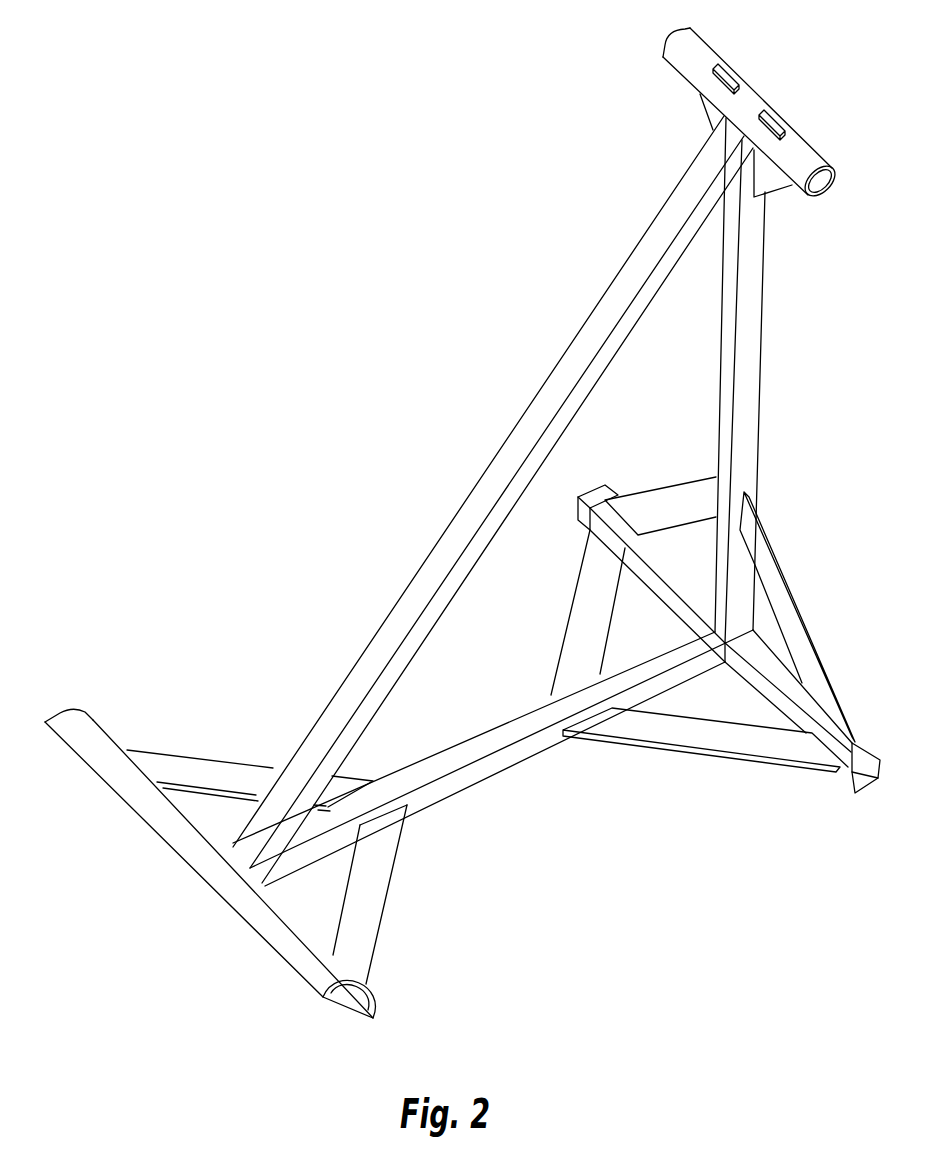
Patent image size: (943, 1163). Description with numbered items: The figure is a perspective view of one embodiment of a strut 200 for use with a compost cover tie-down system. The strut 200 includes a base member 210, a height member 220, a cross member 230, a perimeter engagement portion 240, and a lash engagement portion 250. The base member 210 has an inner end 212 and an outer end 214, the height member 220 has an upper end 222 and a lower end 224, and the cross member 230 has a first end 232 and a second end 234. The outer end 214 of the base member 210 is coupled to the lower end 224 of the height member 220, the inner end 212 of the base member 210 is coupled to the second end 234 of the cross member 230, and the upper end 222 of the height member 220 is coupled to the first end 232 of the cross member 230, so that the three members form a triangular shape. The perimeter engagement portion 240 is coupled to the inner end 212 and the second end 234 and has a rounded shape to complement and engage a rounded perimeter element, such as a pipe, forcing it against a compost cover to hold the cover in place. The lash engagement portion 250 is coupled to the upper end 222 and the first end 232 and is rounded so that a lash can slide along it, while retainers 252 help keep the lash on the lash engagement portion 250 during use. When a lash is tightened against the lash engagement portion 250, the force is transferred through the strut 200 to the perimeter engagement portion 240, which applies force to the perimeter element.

The strut 200 is at (284, 153).
The base member 210 is at (445, 790).
The inner end 212 is at (304, 898).
The outer end 214 is at (724, 690).
The height member 220 is at (757, 420).
The upper end 222 is at (777, 197).
The lower end 224 is at (761, 630).
The cross member 230 is at (475, 514).
The first end 232 is at (707, 134).
The second end 234 is at (225, 825).
The perimeter engagement portion 240 is at (210, 860).
The lash engagement portion 250 is at (750, 100).
The retainers 252 is at (730, 66).